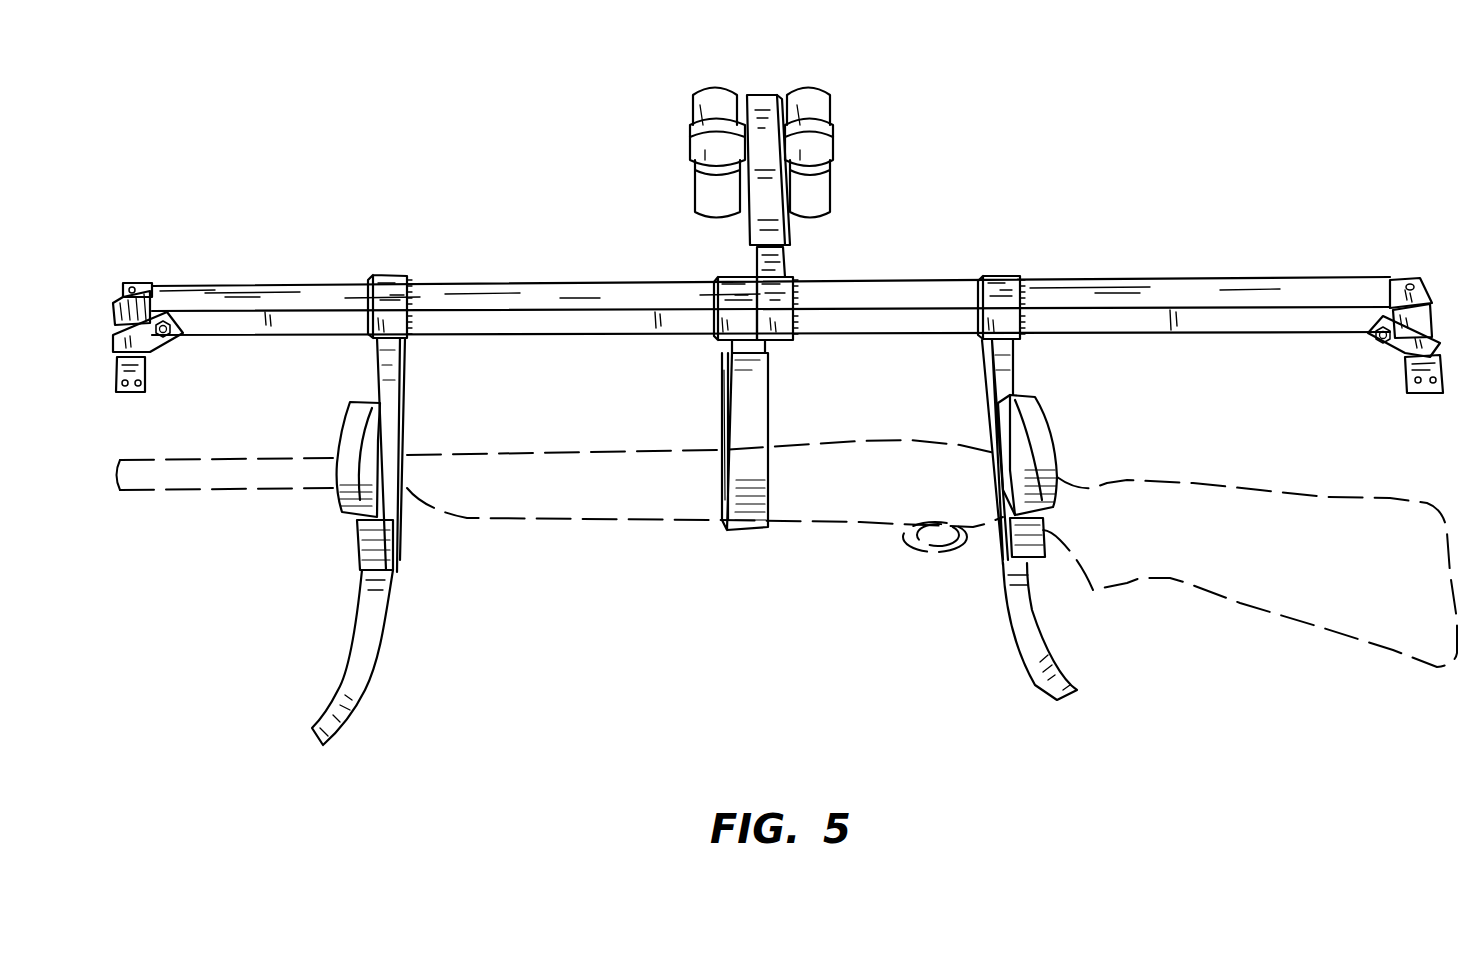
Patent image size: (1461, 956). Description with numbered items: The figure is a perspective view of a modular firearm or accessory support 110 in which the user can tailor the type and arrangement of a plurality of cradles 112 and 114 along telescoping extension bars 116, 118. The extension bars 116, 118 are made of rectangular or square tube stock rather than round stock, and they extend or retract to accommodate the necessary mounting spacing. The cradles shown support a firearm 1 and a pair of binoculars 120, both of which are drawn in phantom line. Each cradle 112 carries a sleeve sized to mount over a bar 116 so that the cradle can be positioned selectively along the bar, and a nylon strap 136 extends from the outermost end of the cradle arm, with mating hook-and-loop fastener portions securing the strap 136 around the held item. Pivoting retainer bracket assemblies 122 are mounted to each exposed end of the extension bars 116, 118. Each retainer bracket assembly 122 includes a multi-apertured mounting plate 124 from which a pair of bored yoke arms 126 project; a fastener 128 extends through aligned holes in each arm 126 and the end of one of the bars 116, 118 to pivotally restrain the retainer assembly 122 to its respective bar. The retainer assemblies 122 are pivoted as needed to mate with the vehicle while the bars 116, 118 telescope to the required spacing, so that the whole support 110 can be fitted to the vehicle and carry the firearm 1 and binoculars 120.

The firearm 1 is at (1247, 488).
The modular firearm or accessory support 110 is at (1068, 158).
The cradle 112 is at (417, 404).
The cradle 114 is at (783, 258).
The telescoping extension bar 116 is at (607, 279).
The telescoping extension bar 118 is at (331, 284).
The pair of binoculars 120 is at (822, 98).
The pivoting retainer bracket assembly 122 is at (150, 404).
The multi-apertured mounting plate 124 is at (130, 284).
The bored yoke arm 126 is at (150, 290).
The fastener 128 is at (172, 337).
The nylon strap 136 is at (743, 406).